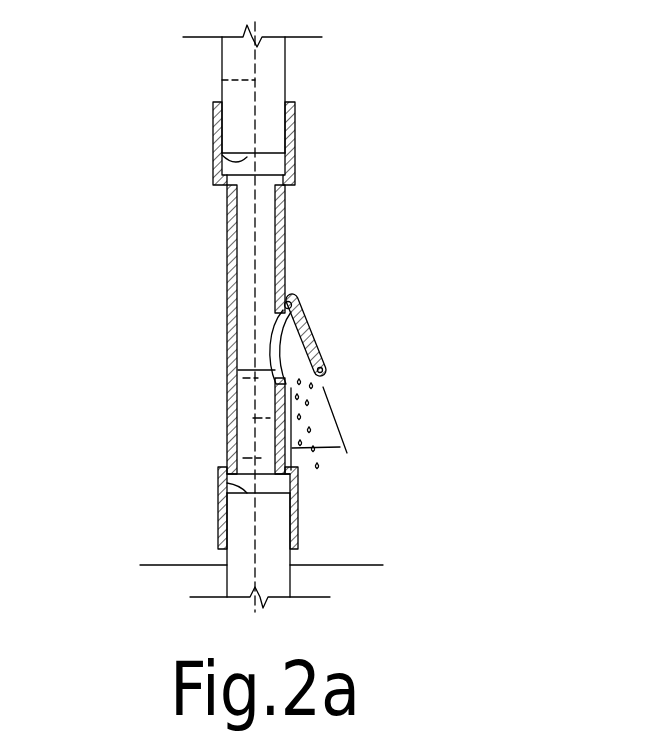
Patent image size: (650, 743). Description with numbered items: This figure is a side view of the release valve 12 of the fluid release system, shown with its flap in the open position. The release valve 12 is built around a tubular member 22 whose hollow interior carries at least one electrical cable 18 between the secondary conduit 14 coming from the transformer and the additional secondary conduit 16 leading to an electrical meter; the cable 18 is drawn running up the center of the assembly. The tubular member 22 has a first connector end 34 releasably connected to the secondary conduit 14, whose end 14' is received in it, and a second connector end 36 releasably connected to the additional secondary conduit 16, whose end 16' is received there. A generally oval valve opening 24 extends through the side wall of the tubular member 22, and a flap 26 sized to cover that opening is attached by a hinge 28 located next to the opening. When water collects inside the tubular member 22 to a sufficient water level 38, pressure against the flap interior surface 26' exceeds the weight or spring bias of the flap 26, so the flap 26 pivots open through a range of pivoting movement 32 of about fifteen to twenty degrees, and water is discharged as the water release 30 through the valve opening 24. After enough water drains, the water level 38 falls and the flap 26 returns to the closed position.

The release valve 12 is at (176, 188).
The secondary conduit 14 is at (264, 550).
The upper end of lower pipe 14' is at (201, 501).
The additional secondary conduit 16 is at (269, 89).
The lower end of upper pipe 16' is at (205, 154).
The electrical cable 18 is at (218, 75).
The tubular member 22 is at (228, 270).
The valve opening 24 is at (310, 345).
The flap 26 is at (322, 328).
The flap interior surface 26' is at (362, 359).
The hinge 28 is at (288, 302).
The water release 30 is at (306, 400).
The range of pivoting movement 32 is at (322, 455).
The first connector end 34 is at (298, 508).
The second connector end 36 is at (295, 143).
The water level 38 is at (240, 366).